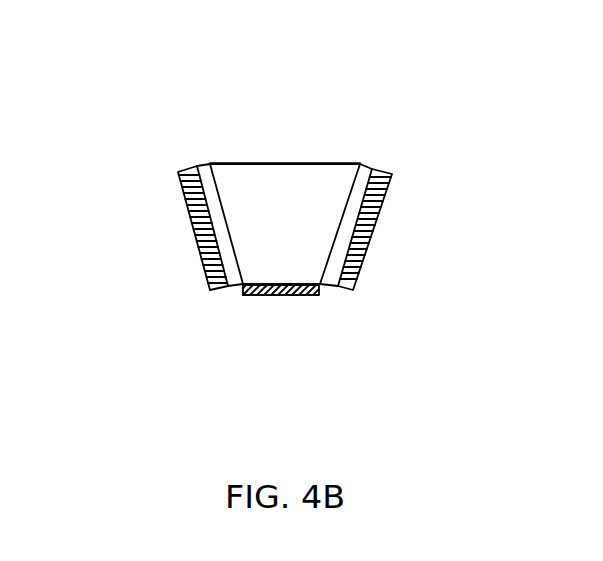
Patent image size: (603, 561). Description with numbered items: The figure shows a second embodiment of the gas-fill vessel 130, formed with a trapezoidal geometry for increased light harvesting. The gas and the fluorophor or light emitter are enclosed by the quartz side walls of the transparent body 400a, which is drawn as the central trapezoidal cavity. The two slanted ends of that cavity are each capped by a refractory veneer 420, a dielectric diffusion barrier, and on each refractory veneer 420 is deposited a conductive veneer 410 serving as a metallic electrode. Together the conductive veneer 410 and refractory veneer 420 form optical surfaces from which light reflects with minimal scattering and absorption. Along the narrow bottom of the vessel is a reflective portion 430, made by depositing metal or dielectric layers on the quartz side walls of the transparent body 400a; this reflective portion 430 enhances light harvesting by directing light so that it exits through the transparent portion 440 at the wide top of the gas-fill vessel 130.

The gas-fill vessel 130 is at (193, 150).
The transparent body 400a is at (306, 262).
The conductive veneer 410 is at (375, 235).
The refractory veneer 420 is at (363, 186).
The reflective portion 430 is at (287, 295).
The transparent portion 440 is at (292, 163).